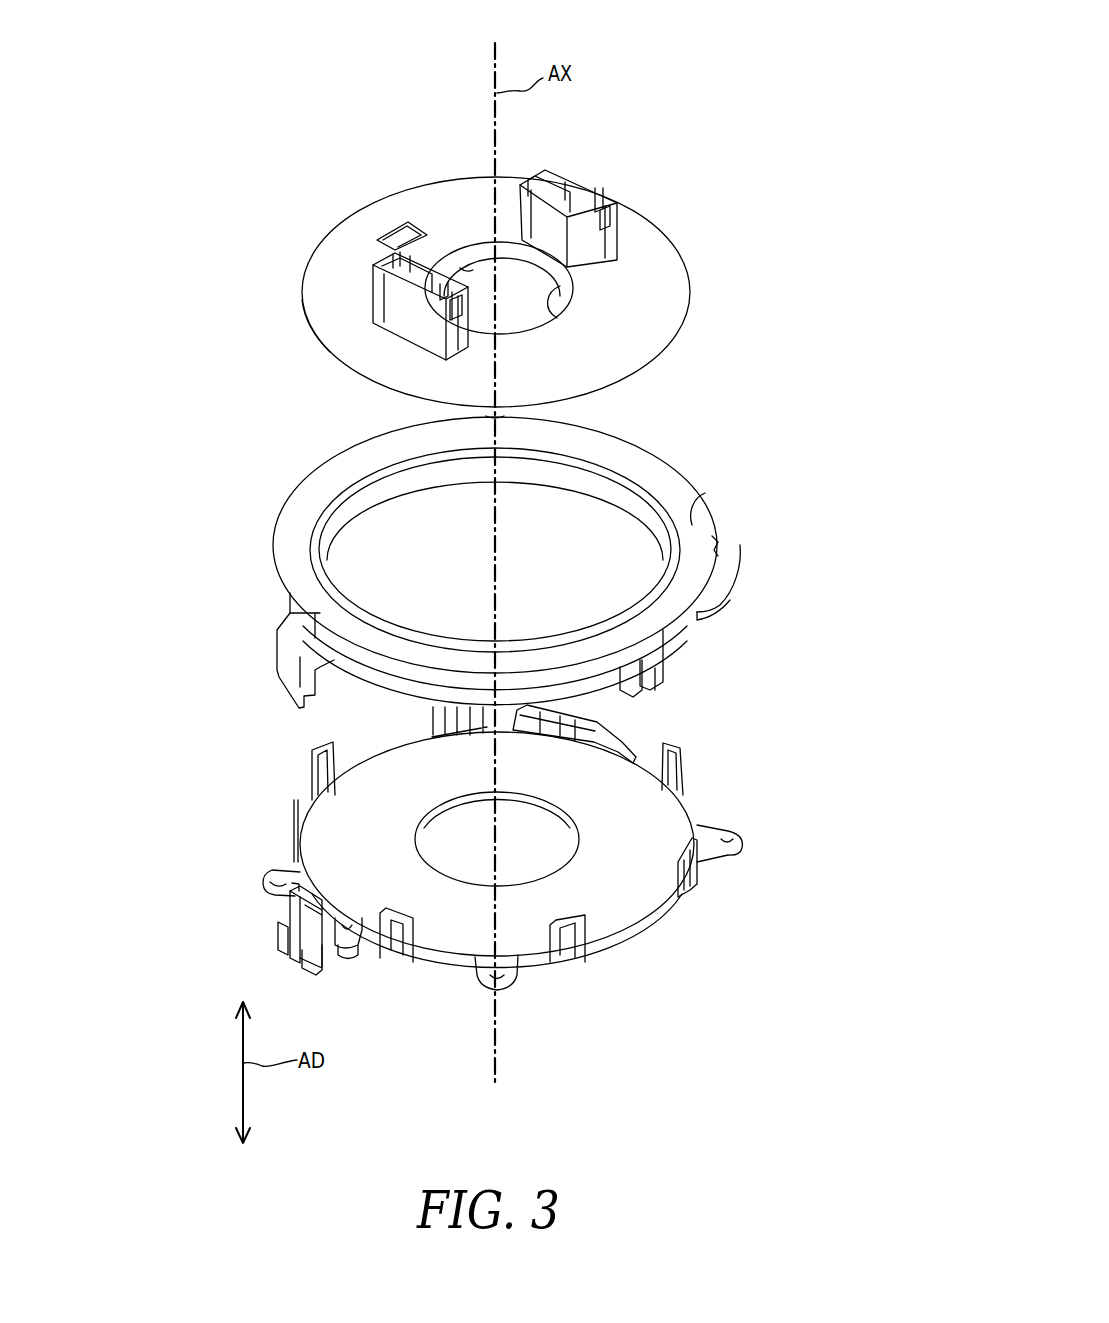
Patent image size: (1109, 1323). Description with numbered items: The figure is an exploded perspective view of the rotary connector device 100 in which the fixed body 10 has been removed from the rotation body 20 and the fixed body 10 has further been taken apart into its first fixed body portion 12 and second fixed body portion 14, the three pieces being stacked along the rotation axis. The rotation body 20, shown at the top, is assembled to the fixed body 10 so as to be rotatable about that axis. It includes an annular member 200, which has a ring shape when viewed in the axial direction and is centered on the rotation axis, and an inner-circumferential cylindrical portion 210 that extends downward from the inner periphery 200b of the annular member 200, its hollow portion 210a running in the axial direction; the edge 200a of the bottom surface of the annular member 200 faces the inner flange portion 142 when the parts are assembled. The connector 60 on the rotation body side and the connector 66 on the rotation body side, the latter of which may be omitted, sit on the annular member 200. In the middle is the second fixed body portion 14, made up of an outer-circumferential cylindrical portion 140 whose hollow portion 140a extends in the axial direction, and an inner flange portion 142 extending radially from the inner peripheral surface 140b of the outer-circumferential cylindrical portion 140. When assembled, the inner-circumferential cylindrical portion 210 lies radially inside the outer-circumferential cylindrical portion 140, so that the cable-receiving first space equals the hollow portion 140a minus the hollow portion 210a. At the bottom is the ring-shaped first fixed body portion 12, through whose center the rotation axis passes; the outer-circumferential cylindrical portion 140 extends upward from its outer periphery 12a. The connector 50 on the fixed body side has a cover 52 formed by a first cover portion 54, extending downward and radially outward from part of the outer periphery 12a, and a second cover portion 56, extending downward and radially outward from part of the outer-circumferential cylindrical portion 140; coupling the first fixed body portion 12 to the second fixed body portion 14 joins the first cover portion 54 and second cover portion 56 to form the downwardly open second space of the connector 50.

The rotary connector device 100 is at (772, 76).
The fixed body 10 is at (767, 411).
The first fixed body portion 12 is at (460, 935).
The outer periphery 12a is at (688, 810).
The second fixed body portion 14 is at (807, 481).
The outer-circumferential cylindrical portion 140 is at (740, 545).
The hollow portion 140a is at (366, 538).
The inner peripheral surface 140b is at (393, 484).
The inner flange portion 142 is at (705, 493).
The rotation body 20 is at (375, 172).
The annular member 200 is at (361, 258).
The edge of bottom surface 200a is at (324, 341).
The inner periphery 200b is at (561, 290).
The inner-circumferential cylindrical portion 210 is at (475, 266).
The hollow portion 210a is at (484, 292).
The connector 60 is at (583, 192).
The connector 66 is at (387, 299).
The connector 50 is at (207, 629).
The cover 52 is at (190, 717).
The first cover portion 54 is at (283, 923).
The second cover portion 56 is at (290, 683).